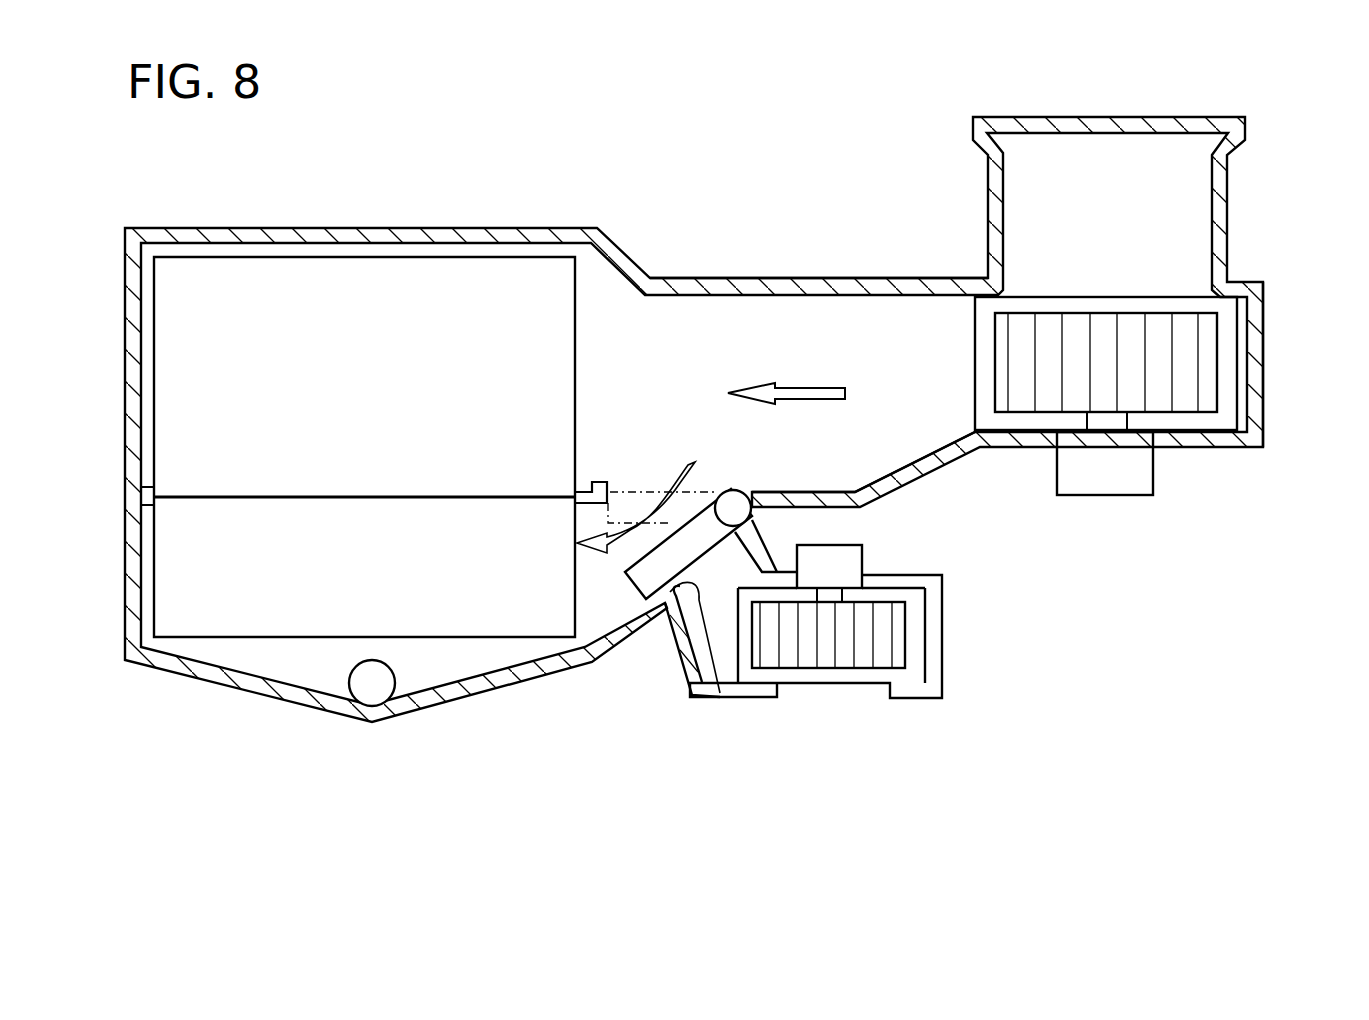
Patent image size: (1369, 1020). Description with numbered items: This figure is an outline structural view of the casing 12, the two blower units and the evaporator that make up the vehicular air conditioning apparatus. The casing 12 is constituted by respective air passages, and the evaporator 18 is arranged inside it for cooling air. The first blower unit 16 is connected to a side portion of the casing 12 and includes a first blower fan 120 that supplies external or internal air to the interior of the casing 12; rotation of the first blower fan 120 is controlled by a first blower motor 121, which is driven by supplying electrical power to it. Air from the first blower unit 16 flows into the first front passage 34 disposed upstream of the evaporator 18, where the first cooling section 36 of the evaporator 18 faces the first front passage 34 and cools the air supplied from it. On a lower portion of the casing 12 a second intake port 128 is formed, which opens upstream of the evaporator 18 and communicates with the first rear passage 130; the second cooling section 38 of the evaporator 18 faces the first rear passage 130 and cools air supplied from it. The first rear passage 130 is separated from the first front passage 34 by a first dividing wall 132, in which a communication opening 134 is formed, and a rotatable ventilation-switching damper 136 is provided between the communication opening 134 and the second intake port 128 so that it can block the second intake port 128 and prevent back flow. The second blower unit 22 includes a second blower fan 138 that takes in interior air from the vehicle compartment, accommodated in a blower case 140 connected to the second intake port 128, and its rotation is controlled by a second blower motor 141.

The casing 12 is at (440, 227).
The first blower unit 16 is at (1282, 372).
The evaporator 18 is at (320, 404).
The second blower unit 22 is at (818, 650).
The first front passage 34 is at (800, 333).
The first cooling section 36 is at (183, 330).
The second cooling section 38 is at (183, 538).
The first blower fan 120 is at (1100, 325).
The first blower motor 121 is at (1102, 480).
The second intake port 128 is at (687, 673).
The first rear passage 130 is at (588, 618).
The first dividing wall 132 is at (815, 500).
The communication opening 134 is at (623, 490).
The ventilation-switching damper 136 is at (688, 547).
The second blower fan 138 is at (825, 653).
The blower case 140 is at (924, 693).
The second blower motor 141 is at (837, 547).